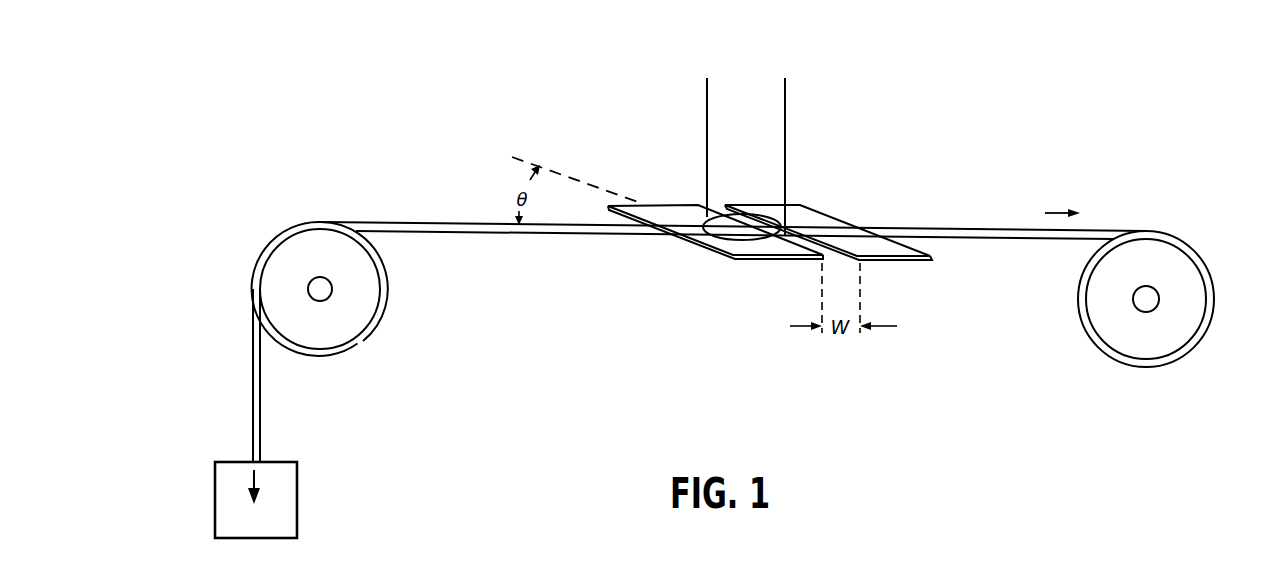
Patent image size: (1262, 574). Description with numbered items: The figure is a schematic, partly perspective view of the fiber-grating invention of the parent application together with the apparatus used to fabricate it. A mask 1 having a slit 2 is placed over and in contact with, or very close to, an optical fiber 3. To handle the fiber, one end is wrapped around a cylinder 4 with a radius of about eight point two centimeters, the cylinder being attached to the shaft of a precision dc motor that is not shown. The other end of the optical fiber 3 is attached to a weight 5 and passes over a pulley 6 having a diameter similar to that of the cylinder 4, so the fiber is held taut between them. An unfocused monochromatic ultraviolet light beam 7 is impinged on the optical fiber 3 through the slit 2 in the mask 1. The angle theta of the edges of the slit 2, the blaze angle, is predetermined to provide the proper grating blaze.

The mask 1 is at (840, 230).
The slit 2 is at (803, 247).
The optical fiber 3 is at (940, 231).
The cylinder 4 is at (1168, 260).
The weight 5 is at (297, 487).
The pulley 6 is at (317, 242).
The ultraviolet light beam 7 is at (715, 119).